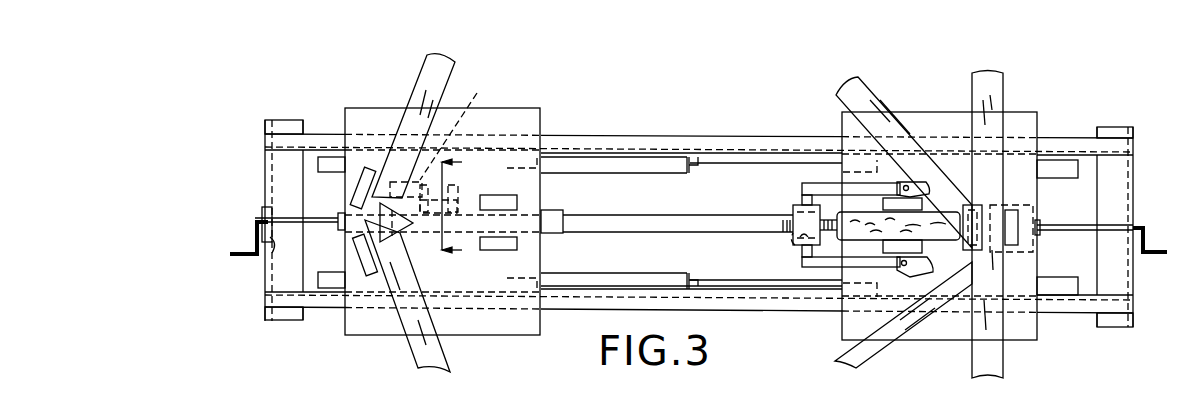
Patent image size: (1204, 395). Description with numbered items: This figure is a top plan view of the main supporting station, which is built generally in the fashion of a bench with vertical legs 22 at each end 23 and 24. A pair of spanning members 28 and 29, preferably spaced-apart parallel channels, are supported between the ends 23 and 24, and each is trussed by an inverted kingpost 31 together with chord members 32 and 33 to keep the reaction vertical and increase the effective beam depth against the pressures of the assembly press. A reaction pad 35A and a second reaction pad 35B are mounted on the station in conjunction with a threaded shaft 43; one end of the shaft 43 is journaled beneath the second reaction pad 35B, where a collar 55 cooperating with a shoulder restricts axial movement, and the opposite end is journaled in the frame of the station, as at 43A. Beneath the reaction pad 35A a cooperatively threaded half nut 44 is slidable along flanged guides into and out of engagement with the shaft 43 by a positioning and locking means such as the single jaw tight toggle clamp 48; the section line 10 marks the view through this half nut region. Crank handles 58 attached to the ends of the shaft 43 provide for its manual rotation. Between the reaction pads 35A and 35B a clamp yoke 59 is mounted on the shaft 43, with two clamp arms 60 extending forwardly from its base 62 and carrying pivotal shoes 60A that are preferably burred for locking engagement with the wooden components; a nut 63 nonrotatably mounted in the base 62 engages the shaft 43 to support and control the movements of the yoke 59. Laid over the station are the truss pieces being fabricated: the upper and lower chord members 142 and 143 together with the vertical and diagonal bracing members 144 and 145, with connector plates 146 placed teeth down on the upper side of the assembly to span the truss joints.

The section line 10- 10 is at (463, 211).
The vertical legs 22 is at (263, 128).
The end 23 is at (263, 181).
The end 24 is at (1134, 223).
The spanning member 28 is at (736, 305).
The spanning member 29 is at (708, 146).
The inverted kingpost 31 is at (687, 170).
The chord member 32 is at (579, 167).
The chord member 33 is at (750, 170).
The reaction pad 35A is at (532, 108).
The second reaction pad 35B is at (1025, 130).
The threaded shaft 43 is at (645, 225).
The journal in frame 43A is at (266, 252).
The half nut 44 is at (430, 238).
The single jaw tight toggle clamp 48 is at (447, 147).
The collar 55 is at (1040, 221).
The crank handle 58 is at (251, 233).
The clamp yoke 59 is at (797, 183).
The clamp arms 60 is at (865, 189).
The pivotal shoes 60A is at (921, 183).
The base 62 is at (793, 211).
The nut 63 is at (801, 236).
The upper chord member 142 is at (430, 88).
The lower chord member 143 is at (997, 98).
The vertical bracing member 144 is at (562, 233).
The diagonal bracing member 145 is at (853, 92).
The connector plates 146 is at (392, 212).